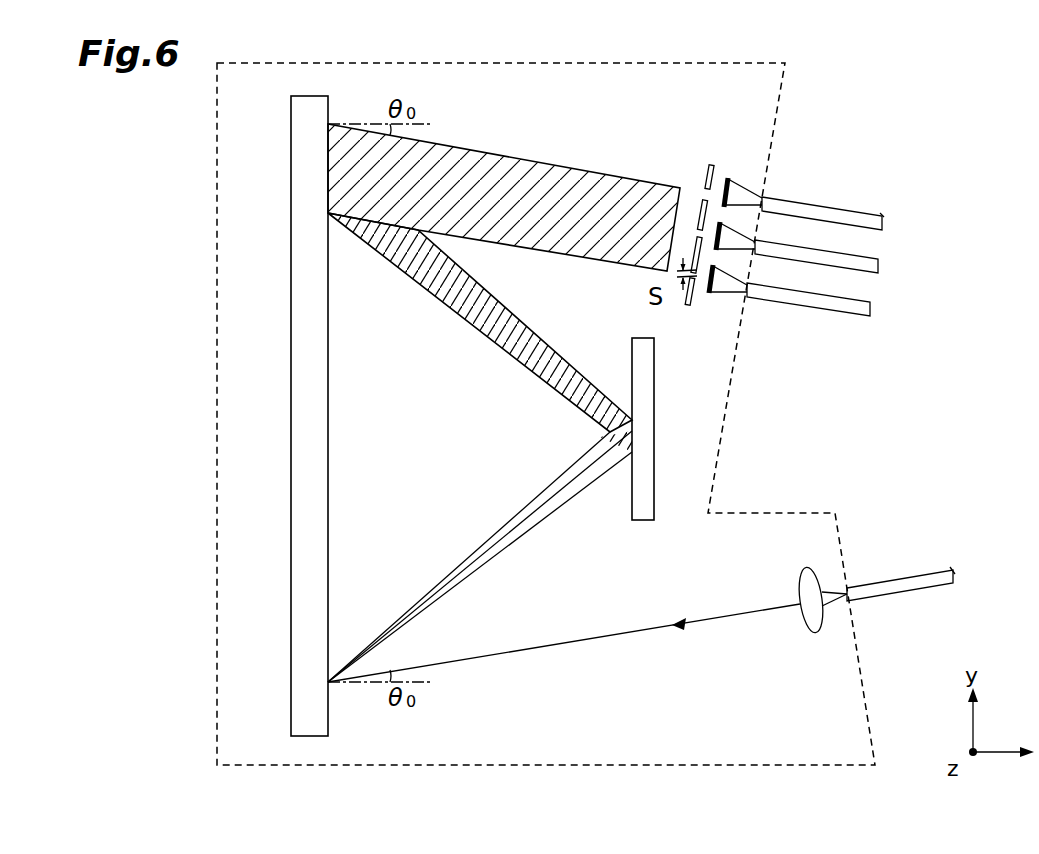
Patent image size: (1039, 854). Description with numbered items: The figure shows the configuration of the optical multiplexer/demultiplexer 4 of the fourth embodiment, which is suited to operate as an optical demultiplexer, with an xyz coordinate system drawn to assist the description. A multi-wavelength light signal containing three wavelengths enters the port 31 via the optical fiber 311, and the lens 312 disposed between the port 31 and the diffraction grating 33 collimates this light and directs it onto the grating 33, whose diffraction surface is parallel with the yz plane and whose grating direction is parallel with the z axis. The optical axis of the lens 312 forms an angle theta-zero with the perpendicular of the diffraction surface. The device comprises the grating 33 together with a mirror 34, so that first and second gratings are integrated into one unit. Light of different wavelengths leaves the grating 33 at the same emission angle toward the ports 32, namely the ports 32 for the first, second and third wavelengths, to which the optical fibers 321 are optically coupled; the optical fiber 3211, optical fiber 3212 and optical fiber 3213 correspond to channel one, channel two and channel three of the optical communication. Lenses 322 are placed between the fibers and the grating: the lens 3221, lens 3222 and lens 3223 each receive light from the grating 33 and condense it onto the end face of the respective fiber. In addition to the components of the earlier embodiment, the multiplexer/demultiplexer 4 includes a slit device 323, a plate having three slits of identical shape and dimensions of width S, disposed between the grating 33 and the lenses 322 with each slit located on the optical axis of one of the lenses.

The optical multiplexer/demultiplexer 4 is at (624, 63).
The port 31 is at (641, 603).
The optical fiber 311 is at (885, 594).
The lens 312 is at (818, 633).
The ports 32 is at (799, 243).
The optical fibers 321 is at (831, 281).
The optical fiber 3211 is at (852, 214).
The optical fiber 3212 is at (848, 270).
The optical fiber 3213 is at (828, 309).
The lenses 322 is at (717, 219).
The lens 3221 is at (730, 177).
The lens 3222 is at (720, 221).
The lens 3223 is at (710, 297).
The slit device 323 is at (706, 178).
The diffraction grating 33 is at (291, 566).
The mirror 34 is at (632, 510).